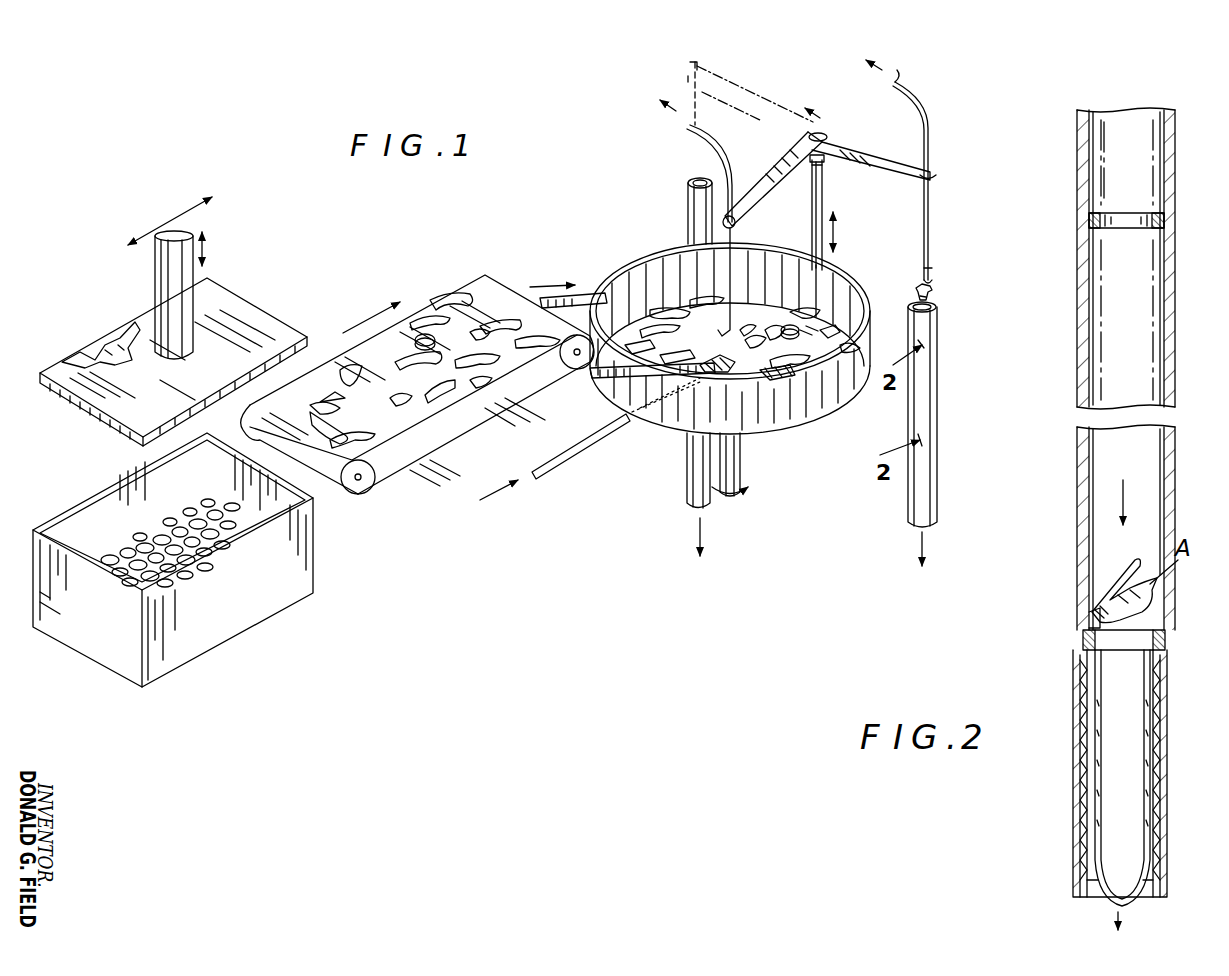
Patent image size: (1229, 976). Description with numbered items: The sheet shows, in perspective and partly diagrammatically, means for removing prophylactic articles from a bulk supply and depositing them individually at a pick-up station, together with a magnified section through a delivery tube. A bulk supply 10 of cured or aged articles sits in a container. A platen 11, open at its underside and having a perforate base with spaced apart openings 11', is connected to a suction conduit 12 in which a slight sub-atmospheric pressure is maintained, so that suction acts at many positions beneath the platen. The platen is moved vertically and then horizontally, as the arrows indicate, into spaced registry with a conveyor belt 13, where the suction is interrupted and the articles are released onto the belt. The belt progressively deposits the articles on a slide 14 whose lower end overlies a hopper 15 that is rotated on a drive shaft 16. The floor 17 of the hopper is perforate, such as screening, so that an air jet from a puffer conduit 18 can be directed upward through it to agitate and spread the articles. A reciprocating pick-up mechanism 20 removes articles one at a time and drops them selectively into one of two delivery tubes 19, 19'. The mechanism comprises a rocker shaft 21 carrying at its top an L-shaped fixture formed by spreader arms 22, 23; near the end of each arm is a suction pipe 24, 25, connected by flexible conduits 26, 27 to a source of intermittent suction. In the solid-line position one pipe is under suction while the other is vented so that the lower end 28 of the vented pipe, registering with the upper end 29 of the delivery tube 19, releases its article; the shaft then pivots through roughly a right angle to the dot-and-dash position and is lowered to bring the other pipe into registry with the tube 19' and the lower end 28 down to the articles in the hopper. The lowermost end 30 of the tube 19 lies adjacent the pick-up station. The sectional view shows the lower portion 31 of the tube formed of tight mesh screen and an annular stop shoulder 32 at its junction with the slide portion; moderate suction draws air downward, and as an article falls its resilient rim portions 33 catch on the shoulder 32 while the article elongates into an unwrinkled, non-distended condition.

In FIG. 1, the bulk supply 10 is at (228, 545).
In FIG. 1, the platen 11 is at (173, 358).
In FIG. 1, the spaced apart openings 11' is at (101, 332).
In FIG. 1, the suction conduit 12 is at (190, 308).
In FIG. 1, the conveyor belt 13 is at (405, 440).
In FIG. 1, the slide 14 is at (580, 298).
In FIG. 1, the hopper 15 is at (645, 268).
In FIG. 1, the drive shaft 16 is at (730, 498).
In FIG. 1, the floor 17 is at (775, 320).
In FIG. 1, the puffer conduit 18 is at (536, 478).
In FIG. 1, the delivery tube 19 is at (947, 434).
In FIG. 2, the delivery tube 19 is at (1095, 369).
In FIG. 1, the delivery tube 19' is at (671, 211).
In FIG. 1, the reciprocating pick-up mechanism 20 is at (824, 184).
In FIG. 1, the rocker shaft 21 is at (822, 208).
In FIG. 1, the spreader arm 22 is at (782, 180).
In FIG. 1, the spreader arm 23 is at (870, 152).
In FIG. 1, the suction pipe 24 is at (736, 226).
In FIG. 1, the suction pipe 25 is at (930, 200).
In FIG. 1, the flexible conduit 26 is at (710, 146).
In FIG. 1, the flexible conduit 27 is at (930, 122).
In FIG. 1, the lower end 28 is at (930, 276).
In FIG. 1, the upper end 29 is at (934, 304).
In FIG. 2, the lowermost end 30 is at (1160, 890).
In FIG. 2, the lower portion 31 is at (1075, 756).
In FIG. 2, the annular stop shoulder 32 is at (1083, 638).
In FIG. 2, the resilient rim portions 33 is at (1092, 612).